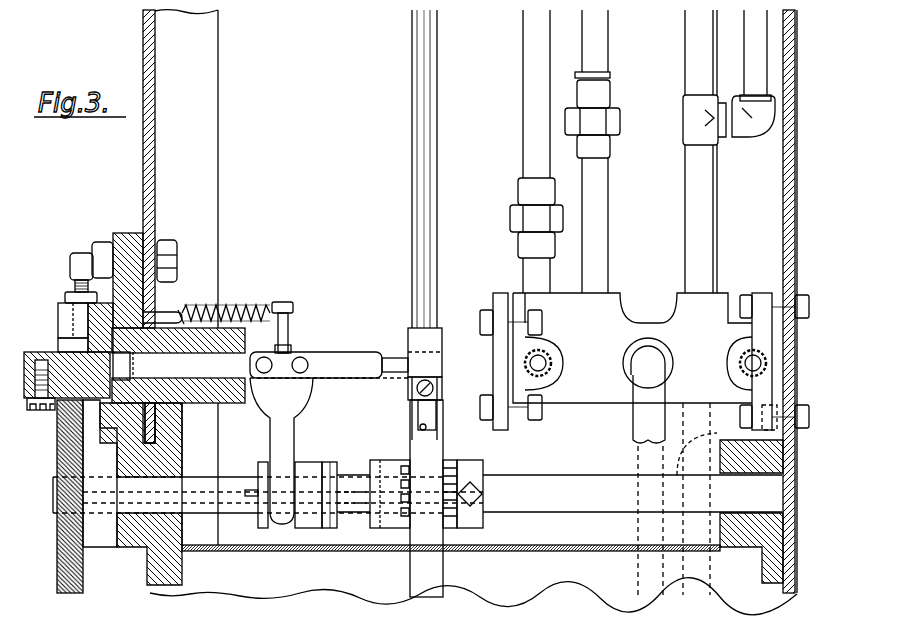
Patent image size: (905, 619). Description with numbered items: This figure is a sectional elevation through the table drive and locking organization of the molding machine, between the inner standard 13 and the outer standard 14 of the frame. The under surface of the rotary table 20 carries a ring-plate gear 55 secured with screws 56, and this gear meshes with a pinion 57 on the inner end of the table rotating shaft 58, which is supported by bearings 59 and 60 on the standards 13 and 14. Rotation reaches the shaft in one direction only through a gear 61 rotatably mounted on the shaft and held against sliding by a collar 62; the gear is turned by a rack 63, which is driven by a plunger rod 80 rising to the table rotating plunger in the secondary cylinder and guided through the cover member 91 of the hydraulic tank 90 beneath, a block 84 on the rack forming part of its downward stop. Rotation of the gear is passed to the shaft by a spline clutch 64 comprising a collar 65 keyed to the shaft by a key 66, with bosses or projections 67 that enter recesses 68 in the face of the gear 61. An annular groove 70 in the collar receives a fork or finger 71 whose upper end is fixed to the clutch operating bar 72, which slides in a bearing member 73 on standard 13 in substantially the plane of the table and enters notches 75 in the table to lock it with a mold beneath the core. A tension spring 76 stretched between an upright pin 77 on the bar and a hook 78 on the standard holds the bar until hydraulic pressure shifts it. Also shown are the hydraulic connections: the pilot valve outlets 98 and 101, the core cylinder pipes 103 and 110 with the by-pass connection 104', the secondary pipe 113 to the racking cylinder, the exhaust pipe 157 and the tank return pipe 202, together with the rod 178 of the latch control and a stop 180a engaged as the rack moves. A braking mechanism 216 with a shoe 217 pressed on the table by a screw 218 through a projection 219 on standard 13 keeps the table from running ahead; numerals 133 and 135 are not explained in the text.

The standard 13 is at (143, 37).
The standard 14 is at (802, 56).
The table 20 is at (75, 355).
The gear 55 is at (40, 415).
The screws 56 is at (41, 362).
The pinion 57 is at (57, 565).
The table rotating shaft 58 is at (210, 502).
The bearing 59 is at (183, 531).
The bearing 60 is at (745, 546).
The gear 61 is at (449, 462).
The collar 62 is at (483, 466).
The rack 63 is at (408, 345).
The spline clutch 64 is at (319, 446).
The collar 65 is at (308, 526).
The key 66 is at (250, 489).
The bosses or projections 67 is at (336, 463).
The recesses 68 is at (372, 529).
The annular groove 70 is at (275, 526).
The fork or finger 71 is at (289, 466).
The clutch operating bar 72 is at (337, 353).
The bearing member 73 is at (245, 341).
The notches 75 is at (123, 352).
The tension spring 76 is at (266, 306).
The upright pin 77 is at (290, 304).
The hook 78 is at (168, 316).
The plunger rod 80 is at (412, 196).
The block 84 is at (410, 438).
The tank or reservoir 90 is at (147, 592).
The cover member 91 is at (601, 546).
The return and delivery outlet 98 is at (740, 364).
The delivery and return outlet 101 is at (652, 311).
The outlet pipe 103 is at (690, 58).
The by-pass connection 104' is at (753, 91).
The outlet pipe 110 is at (527, 161).
The secondary return and delivery outlet pipe 113 is at (606, 222).
The base 133 is at (547, 613).
The base 135 is at (172, 613).
The pipe 157 is at (640, 412).
The rod 178 is at (422, 259).
The stop 180a is at (408, 392).
The tank return pipe 202 is at (763, 488).
The table braking mechanism 216 is at (80, 238).
The shoe 217 is at (73, 345).
The screw 218 is at (75, 284).
The base or projection 219 is at (60, 318).